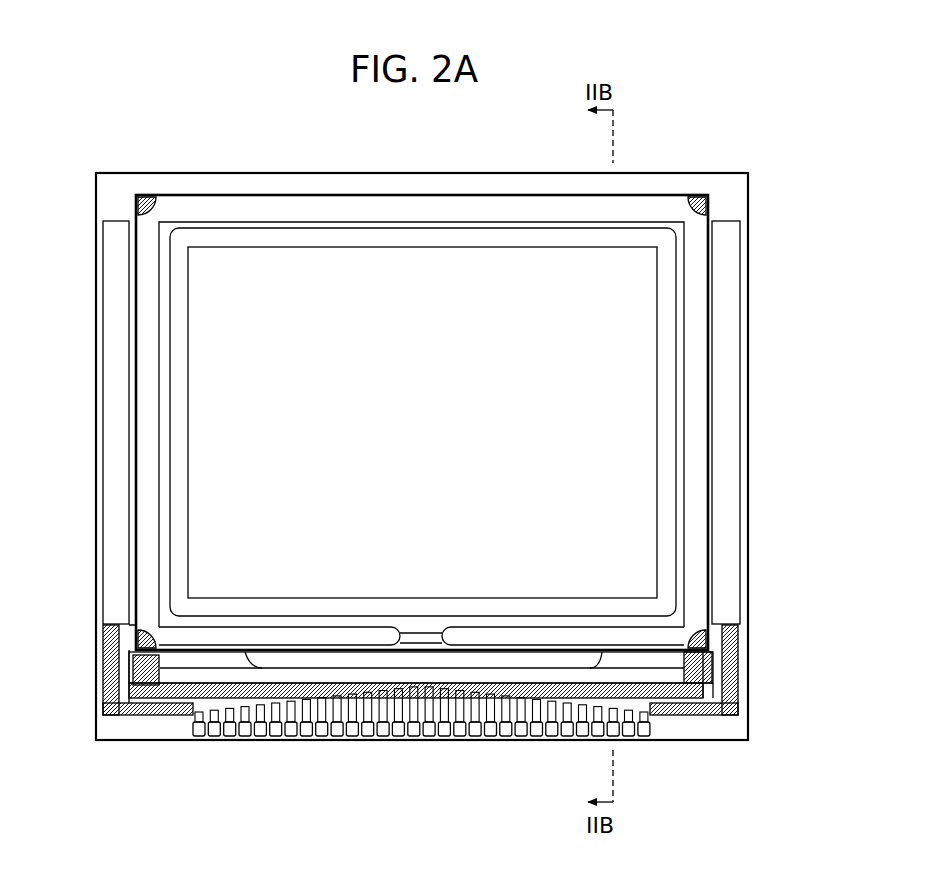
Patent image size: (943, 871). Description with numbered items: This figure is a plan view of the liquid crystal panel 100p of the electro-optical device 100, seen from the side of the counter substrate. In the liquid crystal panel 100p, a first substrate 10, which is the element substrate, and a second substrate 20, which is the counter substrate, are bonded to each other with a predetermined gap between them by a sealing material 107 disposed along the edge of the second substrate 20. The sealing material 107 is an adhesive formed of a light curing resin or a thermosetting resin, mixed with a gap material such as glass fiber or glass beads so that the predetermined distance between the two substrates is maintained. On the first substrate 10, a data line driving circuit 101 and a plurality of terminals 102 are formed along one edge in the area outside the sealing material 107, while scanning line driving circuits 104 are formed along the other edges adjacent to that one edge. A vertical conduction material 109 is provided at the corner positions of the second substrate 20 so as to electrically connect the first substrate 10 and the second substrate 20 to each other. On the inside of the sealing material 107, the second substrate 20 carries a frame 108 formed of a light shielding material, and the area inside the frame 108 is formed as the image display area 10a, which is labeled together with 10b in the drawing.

The electro-optical device 100 is at (683, 74).
The liquid crystal panel 100p is at (661, 171).
The first substrate 10 is at (500, 172).
The image display area 10a is at (329, 422).
The display area 10b is at (243, 412).
The second substrate 20 is at (538, 194).
The data line driving circuit 101 is at (670, 675).
The terminals 102 is at (432, 737).
The scanning line driving circuits 104 is at (112, 550).
The sealing material 107 is at (693, 400).
The frame 108 is at (667, 312).
The vertical conduction material 109 is at (140, 200).